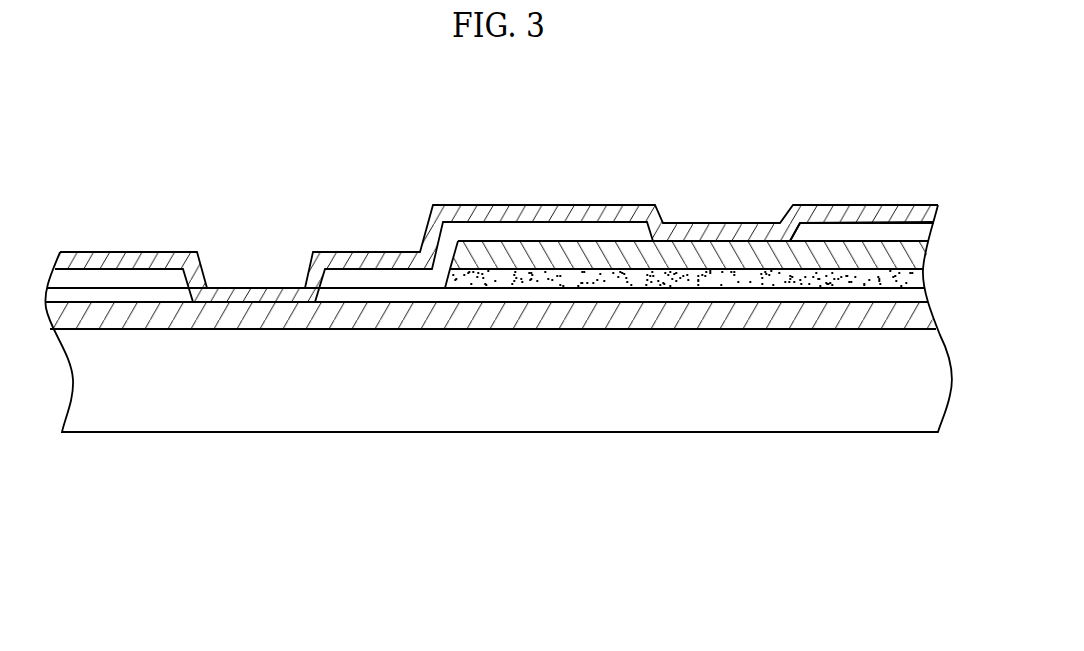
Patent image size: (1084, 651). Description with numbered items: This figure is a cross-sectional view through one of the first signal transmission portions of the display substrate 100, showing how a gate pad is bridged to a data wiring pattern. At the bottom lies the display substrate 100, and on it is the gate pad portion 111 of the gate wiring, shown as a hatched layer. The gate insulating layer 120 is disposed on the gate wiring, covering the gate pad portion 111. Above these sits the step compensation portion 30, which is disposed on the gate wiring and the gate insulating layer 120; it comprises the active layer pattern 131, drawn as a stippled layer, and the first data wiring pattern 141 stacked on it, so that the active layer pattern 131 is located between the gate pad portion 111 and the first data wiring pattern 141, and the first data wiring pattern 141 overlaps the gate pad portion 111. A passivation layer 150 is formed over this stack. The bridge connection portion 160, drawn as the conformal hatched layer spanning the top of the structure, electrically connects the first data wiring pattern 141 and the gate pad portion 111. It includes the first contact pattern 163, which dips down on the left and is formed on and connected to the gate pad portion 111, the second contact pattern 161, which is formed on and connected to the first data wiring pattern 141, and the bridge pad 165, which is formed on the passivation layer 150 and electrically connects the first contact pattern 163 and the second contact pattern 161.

The display substrate 100 is at (170, 410).
The gate pad portion 111 is at (378, 320).
The gate insulating layer 120 is at (523, 291).
The active layer pattern 131 is at (727, 278).
The first data wiring pattern 141 is at (812, 256).
The step compensation portion 30 is at (687, 401).
The passivation layer 150 is at (848, 232).
The bridge connection portion 160 is at (496, 191).
The second contact pattern 161 is at (292, 124).
The first contact pattern 163 is at (271, 284).
The bridge pad 165 is at (560, 205).